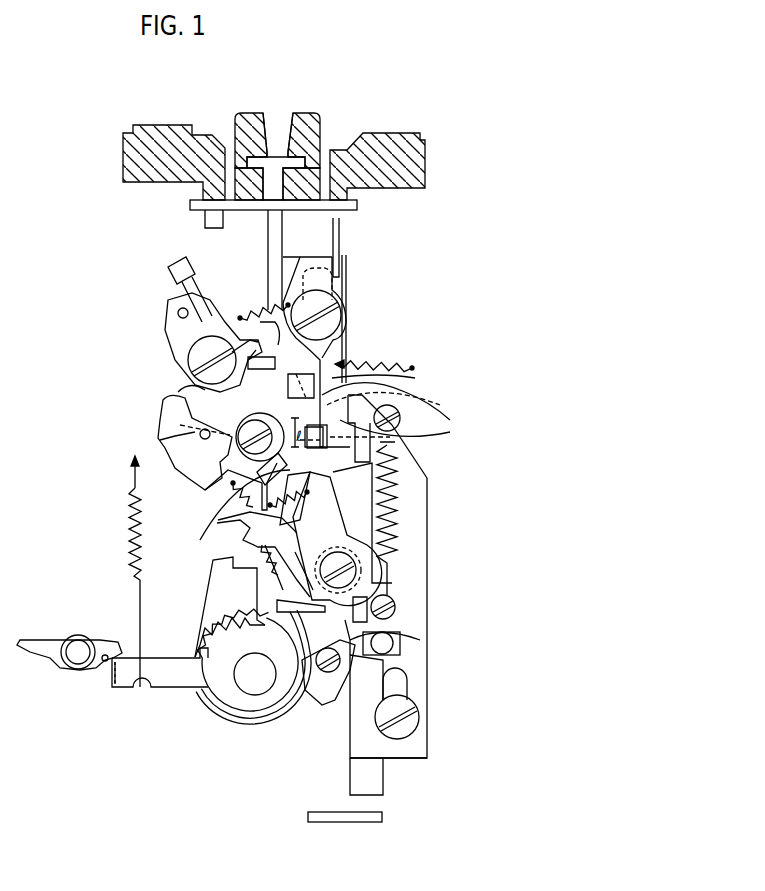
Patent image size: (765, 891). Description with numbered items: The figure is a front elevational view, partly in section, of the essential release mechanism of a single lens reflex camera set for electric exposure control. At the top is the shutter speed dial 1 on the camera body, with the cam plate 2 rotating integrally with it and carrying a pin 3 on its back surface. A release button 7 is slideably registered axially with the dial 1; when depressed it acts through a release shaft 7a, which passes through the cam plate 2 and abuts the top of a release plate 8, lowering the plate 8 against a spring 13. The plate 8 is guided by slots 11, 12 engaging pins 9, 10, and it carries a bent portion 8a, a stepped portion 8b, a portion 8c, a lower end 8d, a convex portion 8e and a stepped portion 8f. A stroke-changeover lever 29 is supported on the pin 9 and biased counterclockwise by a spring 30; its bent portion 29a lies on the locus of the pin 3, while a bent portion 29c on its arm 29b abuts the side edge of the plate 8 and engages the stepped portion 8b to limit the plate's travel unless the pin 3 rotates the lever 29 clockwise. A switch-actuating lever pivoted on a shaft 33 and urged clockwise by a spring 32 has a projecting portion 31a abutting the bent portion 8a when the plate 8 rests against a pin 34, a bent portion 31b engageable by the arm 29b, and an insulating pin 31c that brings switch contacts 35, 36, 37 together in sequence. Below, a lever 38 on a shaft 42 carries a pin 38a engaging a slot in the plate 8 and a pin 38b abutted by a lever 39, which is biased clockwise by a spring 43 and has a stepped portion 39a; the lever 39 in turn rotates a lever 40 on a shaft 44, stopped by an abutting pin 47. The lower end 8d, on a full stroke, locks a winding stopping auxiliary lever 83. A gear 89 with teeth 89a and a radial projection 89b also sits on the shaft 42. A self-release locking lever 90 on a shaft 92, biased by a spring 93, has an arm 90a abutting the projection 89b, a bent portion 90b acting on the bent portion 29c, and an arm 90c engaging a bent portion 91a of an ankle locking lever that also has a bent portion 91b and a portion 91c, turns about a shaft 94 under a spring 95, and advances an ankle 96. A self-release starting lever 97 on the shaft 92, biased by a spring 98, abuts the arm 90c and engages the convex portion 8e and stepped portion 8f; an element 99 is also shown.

The shutter speed dial 1 is at (125, 163).
The cam plate 2 is at (192, 203).
The pin 3 is at (207, 224).
The release button 7 is at (328, 115).
The release shaft 7a is at (300, 224).
The release plate 8 is at (427, 478).
The bent portion 8a is at (274, 378).
The stepped portion 8b is at (412, 410).
The frame portion 8c is at (400, 672).
The lower end 8d is at (372, 778).
The convex portion 8e is at (402, 648).
The stepped portion 8f is at (405, 632).
The pin 9 is at (340, 316).
The pin 10 is at (410, 745).
The slot 11 is at (345, 267).
The slot 12 is at (408, 726).
The spring 13 is at (392, 565).
The stroke-changeover lever 29 is at (338, 343).
The bent portion 29a is at (343, 234).
The arm 29b is at (395, 401).
The bent portion 29c is at (395, 445).
The spring 30 is at (390, 365).
The projecting portion 31a is at (255, 334).
The bent portion 31b is at (399, 372).
The electrically insulating pin 31c is at (180, 316).
The spring 32 is at (240, 316).
The shaft 33 is at (198, 352).
The pin 34 is at (455, 433).
The switch contact 35 is at (170, 312).
The switch contact 36 is at (175, 278).
The switch contact 37 is at (206, 283).
The lever 38 is at (345, 718).
The pin 38a is at (408, 690).
The pin 38b is at (330, 674).
The lever 39 is at (165, 682).
The stepped portion 39a is at (230, 598).
The lever 40 is at (43, 652).
The shaft 42 is at (254, 695).
The spring 43 is at (130, 490).
The shaft 44 is at (78, 660).
The abutting pin 47 is at (106, 665).
The winding stopping auxiliary lever 83 is at (355, 822).
The gear 89 is at (226, 700).
The teeth 89a is at (230, 622).
The radial projection 89b is at (300, 700).
The self-release locking lever 90 is at (372, 525).
The arm 90a is at (292, 705).
The bent portion 90b is at (402, 420).
The arm 90c is at (245, 535).
The bent portion 91a is at (225, 515).
The bent portion 91b is at (225, 478).
The lever portion 91c is at (195, 412).
The shaft 92 is at (396, 607).
The spring 93 is at (260, 552).
The shaft 94 is at (250, 418).
The spring 95 is at (230, 490).
The ankle 96 is at (170, 440).
The self-release starting lever 97 is at (330, 490).
The spring 98 is at (355, 555).
The bracket 99 is at (183, 386).